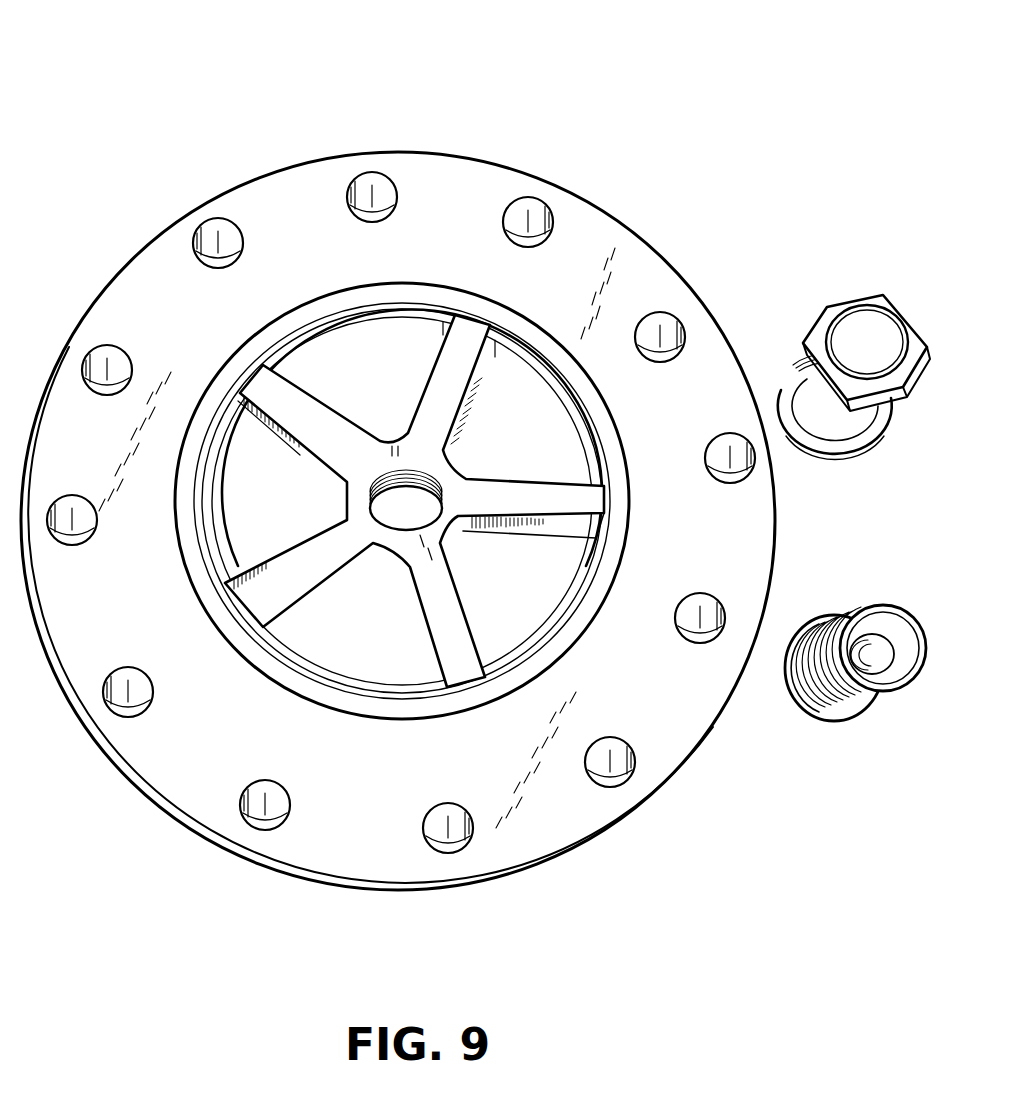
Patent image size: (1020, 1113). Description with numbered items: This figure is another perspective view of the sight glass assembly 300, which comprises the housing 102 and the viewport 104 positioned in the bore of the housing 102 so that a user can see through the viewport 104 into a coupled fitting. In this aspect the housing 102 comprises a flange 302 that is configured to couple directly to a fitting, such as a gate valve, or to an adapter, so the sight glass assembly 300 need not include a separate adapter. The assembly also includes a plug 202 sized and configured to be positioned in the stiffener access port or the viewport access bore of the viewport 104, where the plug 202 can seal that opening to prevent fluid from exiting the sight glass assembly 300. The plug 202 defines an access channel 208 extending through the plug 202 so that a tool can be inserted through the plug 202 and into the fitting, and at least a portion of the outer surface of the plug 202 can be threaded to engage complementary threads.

The sight glass assembly 300 is at (398, 447).
The housing 102 is at (477, 197).
The viewport 104 is at (360, 388).
The flange 302 is at (580, 245).
The plug 202 is at (850, 337).
The access channel 208 is at (884, 626).